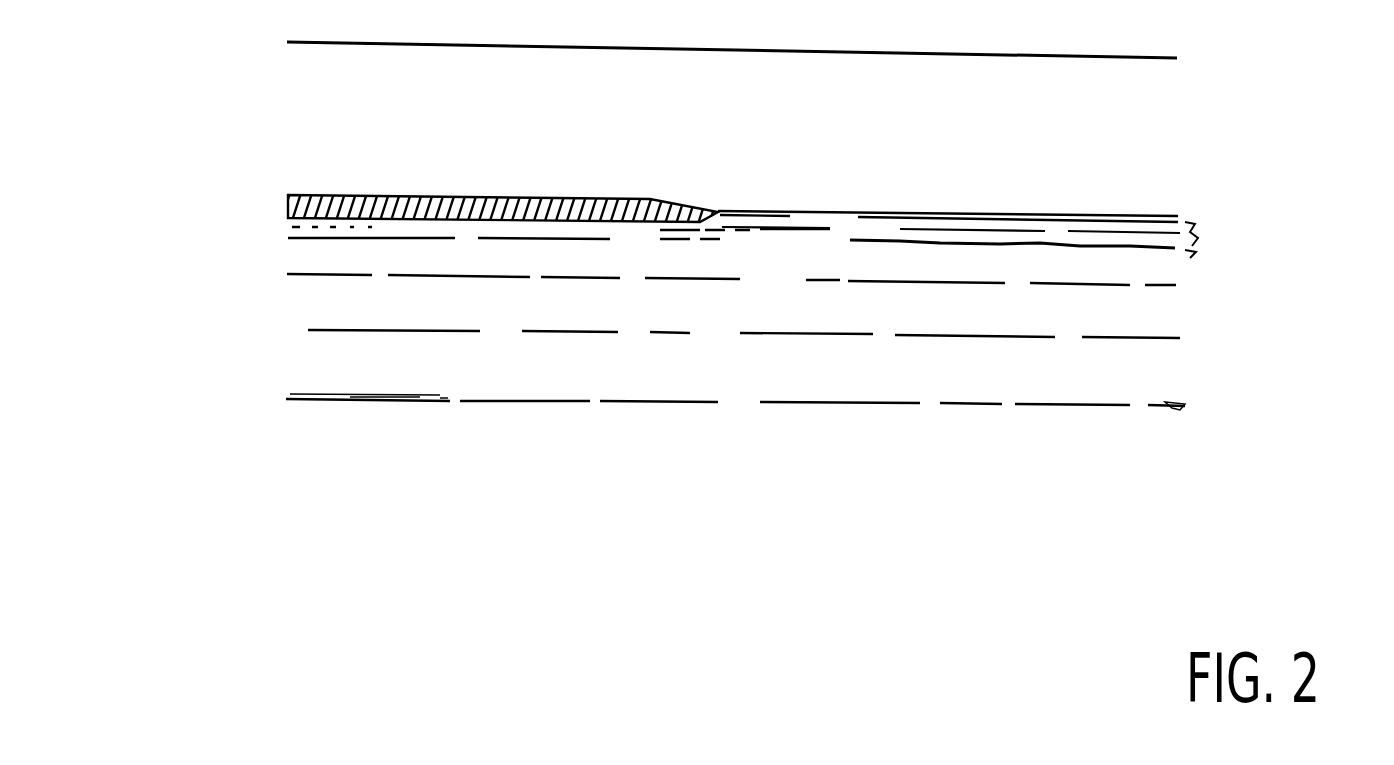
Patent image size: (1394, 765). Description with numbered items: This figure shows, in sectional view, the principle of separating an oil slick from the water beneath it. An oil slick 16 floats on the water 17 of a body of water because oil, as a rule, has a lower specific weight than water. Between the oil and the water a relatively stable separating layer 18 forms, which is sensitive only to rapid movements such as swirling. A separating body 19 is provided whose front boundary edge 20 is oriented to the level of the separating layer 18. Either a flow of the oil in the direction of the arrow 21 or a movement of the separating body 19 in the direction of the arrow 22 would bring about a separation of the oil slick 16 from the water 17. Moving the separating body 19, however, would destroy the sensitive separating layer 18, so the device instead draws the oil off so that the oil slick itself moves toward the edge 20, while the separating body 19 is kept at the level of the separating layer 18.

The oil slick 16 is at (940, 120).
The water 17 is at (1081, 372).
The separating layer 18 is at (790, 210).
The separating body 19 is at (461, 222).
The front boundary edge 20 is at (718, 212).
The arrow 21 is at (1377, 143).
The arrow 22 is at (215, 199).